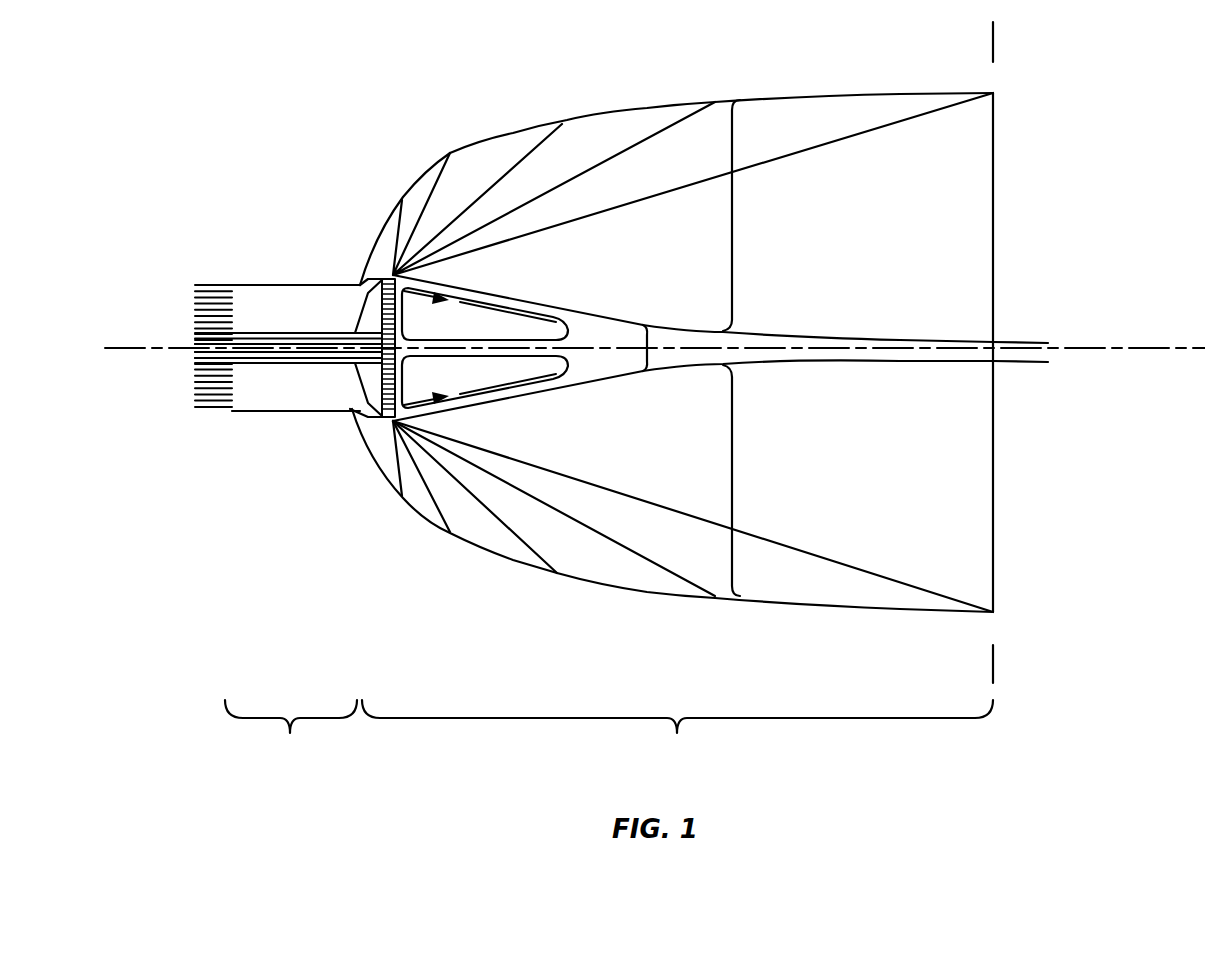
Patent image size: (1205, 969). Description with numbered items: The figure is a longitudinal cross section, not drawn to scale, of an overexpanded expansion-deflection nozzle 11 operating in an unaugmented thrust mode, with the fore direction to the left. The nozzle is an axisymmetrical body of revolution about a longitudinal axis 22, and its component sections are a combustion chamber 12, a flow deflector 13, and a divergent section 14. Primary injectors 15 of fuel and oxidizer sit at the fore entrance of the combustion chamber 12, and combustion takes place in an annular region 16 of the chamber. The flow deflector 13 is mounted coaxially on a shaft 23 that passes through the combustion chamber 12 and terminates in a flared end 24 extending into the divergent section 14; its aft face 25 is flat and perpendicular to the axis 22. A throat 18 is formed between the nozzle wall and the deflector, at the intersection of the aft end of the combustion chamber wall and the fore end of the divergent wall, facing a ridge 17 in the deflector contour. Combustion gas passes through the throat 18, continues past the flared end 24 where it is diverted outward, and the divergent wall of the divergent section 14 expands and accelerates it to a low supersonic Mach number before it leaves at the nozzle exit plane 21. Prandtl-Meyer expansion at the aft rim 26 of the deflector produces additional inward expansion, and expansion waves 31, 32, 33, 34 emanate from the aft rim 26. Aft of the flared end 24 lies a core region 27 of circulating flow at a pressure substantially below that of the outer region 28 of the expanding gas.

The expansion-deflection nozzle 11 is at (276, 81).
The combustion chamber 12 is at (291, 737).
The flow deflector 13 is at (375, 318).
The divergent section 14 is at (677, 737).
The primary injectors 15 is at (190, 319).
The annular region 16 is at (265, 305).
The ridge 17 is at (356, 407).
The throat 18 is at (349, 280).
The nozzle exit plane 21 is at (995, 660).
The longitudinal axis 22 is at (1087, 353).
The shaft 23 is at (275, 367).
The flared end 24 is at (372, 285).
The aft face 25 is at (421, 240).
The aft rim 26 is at (390, 423).
The core region 27 is at (658, 350).
The outer region 28 is at (739, 216).
The expansion wave 31 is at (440, 518).
The expansion wave 32 is at (537, 553).
The expansion wave 33 is at (660, 573).
The expansion wave 34 is at (938, 598).